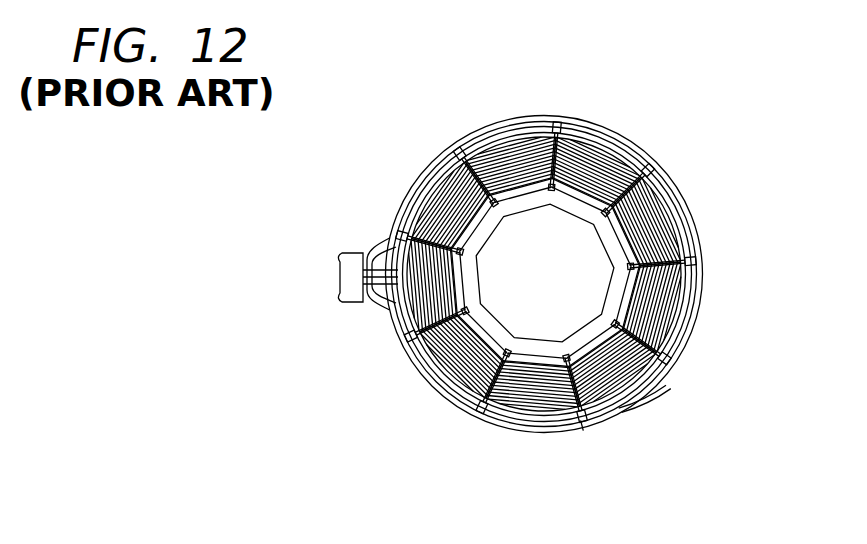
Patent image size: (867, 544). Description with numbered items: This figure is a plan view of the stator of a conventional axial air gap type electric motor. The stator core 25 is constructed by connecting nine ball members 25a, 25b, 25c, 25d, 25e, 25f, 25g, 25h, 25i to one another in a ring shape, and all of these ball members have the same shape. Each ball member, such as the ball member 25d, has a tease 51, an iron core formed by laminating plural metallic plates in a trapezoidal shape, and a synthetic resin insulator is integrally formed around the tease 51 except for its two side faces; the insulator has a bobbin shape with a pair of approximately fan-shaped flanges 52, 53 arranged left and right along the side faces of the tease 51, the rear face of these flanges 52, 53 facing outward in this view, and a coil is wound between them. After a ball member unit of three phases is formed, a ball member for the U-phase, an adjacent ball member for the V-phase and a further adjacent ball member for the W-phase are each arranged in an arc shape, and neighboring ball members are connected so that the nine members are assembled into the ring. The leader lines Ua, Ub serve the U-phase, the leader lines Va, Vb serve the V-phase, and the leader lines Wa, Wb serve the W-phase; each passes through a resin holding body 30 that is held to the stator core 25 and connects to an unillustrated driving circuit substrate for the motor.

The stator core 25 is at (432, 120).
The ball member 25a is at (643, 145).
The ball member 25b is at (705, 232).
The ball member 25c is at (703, 343).
The ball member 25d is at (622, 423).
The ball member 25e is at (508, 437).
The ball member 25f is at (418, 388).
The ball member 25g is at (363, 243).
The ball member 25h is at (402, 177).
The ball member 25i is at (515, 113).
The holding body 30 is at (350, 295).
The leader line for the U-phase Ua is at (337, 265).
The leader line for the U-phase Ub is at (337, 270).
The leader line for the V-phase Va is at (337, 275).
The leader line for the V-phase Vb is at (337, 280).
The leader line for the W-phase Wa is at (337, 285).
The leader line for the W-phase Wb is at (337, 290).
The tease 51 is at (582, 427).
The flange 52 is at (638, 382).
The flange 53 is at (642, 396).